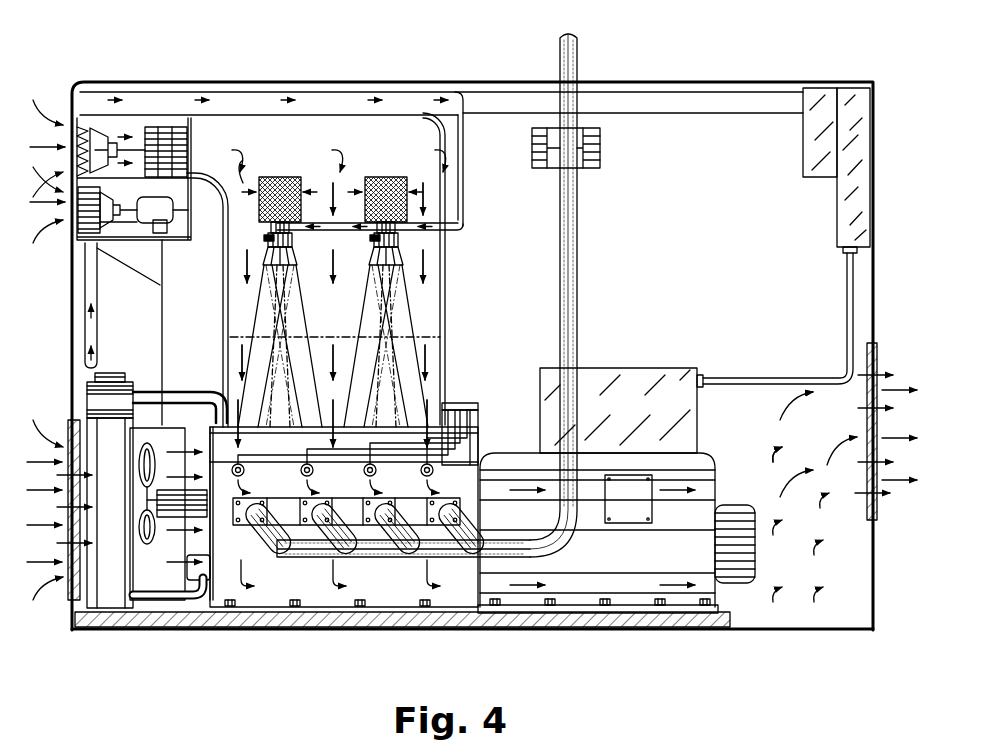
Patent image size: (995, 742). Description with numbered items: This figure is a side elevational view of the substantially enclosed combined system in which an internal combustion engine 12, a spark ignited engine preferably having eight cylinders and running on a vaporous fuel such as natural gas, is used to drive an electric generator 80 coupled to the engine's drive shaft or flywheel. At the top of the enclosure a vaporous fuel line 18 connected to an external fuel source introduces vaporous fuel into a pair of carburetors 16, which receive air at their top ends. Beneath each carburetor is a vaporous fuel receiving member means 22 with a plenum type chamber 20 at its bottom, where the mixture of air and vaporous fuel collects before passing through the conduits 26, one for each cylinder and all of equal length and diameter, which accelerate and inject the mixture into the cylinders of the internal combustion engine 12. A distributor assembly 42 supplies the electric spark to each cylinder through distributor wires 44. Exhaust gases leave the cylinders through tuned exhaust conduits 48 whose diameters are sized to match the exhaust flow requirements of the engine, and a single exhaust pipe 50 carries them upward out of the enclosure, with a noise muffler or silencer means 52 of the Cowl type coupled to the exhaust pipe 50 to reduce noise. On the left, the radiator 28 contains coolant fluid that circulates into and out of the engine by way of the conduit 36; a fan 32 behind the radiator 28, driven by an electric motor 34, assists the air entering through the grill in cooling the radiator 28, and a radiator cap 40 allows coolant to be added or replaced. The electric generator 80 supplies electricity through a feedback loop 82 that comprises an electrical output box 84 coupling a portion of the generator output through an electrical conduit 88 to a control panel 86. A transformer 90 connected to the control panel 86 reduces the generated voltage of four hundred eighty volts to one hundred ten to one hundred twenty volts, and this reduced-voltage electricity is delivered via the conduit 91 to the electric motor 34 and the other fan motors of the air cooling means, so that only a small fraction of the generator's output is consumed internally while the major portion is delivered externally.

The internal combustion engine 12 is at (376, 586).
The carburetors 16 is at (283, 172).
The vaporous fuel line 18 is at (249, 93).
The plenum type chamber 20 is at (300, 255).
The vaporous fuel receiving member means 22 is at (265, 239).
The conduits 26 is at (305, 315).
The radiator 28 is at (108, 592).
The fan 32 is at (148, 533).
The electric motor 34 is at (205, 505).
The conduit 36 is at (190, 598).
The radiator cap 40 is at (107, 373).
The distributor assembly 42 is at (478, 398).
The distributor wires 44 is at (470, 440).
The exhaust conduits 48 is at (268, 541).
The exhaust pipe 50 is at (579, 250).
The noise muffler or silencer means 52 is at (541, 170).
The electric generator 80 is at (616, 558).
The feedback loop 82 is at (748, 362).
The electrical output box 84 is at (668, 368).
The control panel 86 is at (840, 213).
The electrical conduit 88 is at (740, 385).
The transformer 90 is at (808, 147).
The conduit 91 is at (708, 115).